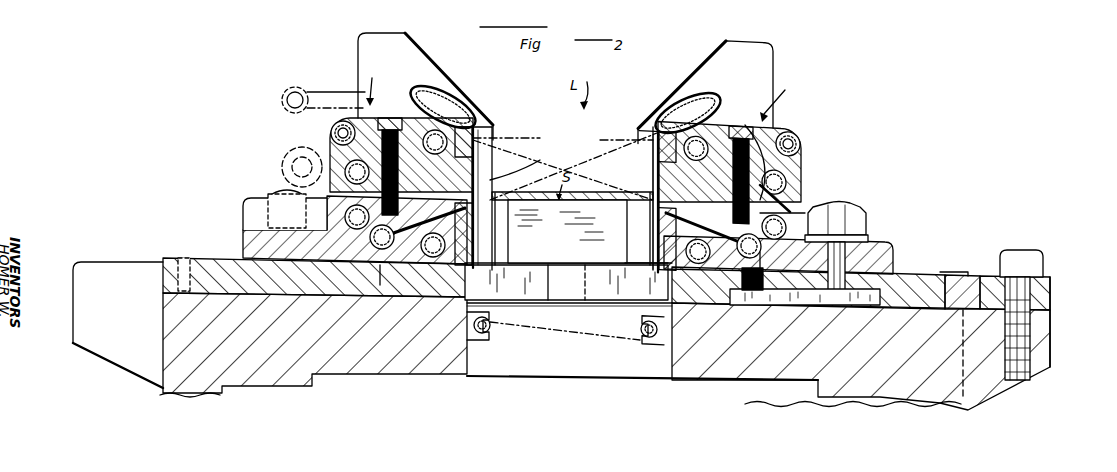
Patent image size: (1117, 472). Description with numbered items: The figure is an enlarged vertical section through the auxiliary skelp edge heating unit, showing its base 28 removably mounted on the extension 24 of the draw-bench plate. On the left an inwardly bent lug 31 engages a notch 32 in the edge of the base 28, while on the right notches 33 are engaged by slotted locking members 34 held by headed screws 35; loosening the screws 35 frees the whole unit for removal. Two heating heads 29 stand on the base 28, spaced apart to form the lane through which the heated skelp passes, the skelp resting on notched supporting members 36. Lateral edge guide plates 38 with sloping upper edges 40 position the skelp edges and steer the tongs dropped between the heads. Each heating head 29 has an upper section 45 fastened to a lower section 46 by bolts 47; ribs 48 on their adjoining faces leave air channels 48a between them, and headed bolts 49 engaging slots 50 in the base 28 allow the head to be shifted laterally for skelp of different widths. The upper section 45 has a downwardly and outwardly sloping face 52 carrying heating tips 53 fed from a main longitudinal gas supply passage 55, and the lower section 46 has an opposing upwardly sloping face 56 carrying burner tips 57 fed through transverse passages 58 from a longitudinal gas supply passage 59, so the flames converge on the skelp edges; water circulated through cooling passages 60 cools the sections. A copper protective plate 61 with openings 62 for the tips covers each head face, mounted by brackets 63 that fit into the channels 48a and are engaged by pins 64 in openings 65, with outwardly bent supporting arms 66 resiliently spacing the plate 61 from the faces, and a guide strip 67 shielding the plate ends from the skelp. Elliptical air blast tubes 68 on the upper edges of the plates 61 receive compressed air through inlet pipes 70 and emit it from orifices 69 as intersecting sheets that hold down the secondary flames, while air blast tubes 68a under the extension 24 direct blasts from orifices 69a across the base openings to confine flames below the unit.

The extension of the draw-bench plate 24 is at (180, 364).
The base 28 is at (912, 278).
The heating heads 29 is at (584, 93).
The inwardly bent lug 31 is at (133, 262).
The notch 32 is at (182, 257).
The notches 33 is at (955, 275).
The slotted locking members 34 is at (1050, 300).
The headed screws 35 is at (1018, 252).
The notched supporting members 36 is at (560, 268).
The lateral edge guide plates 38 is at (378, 45).
The sloping upper edges 40 is at (438, 70).
The upper section 45 is at (358, 117).
The lower section 46 is at (243, 233).
The bolts 47 is at (390, 116).
The ribs or flanges 48 is at (780, 195).
The air channels or slots 48a is at (290, 190).
The headed bolts 49 is at (862, 218).
The slots 50 is at (805, 290).
The downwardly and outwardly sloping face 52 is at (540, 180).
The heating tips 53 is at (535, 165).
The main longitudinal gas supply passage 55 is at (330, 133).
The upwardly and outwardly sloping faces 56 is at (640, 262).
The burner tips 57 is at (562, 225).
The transverse passages 58 is at (718, 272).
The longitudinal gas supply passage 59 is at (380, 285).
The cooling passages 60 is at (318, 160).
The protective plate 61 is at (492, 138).
The openings 62 is at (560, 240).
The brackets 63 is at (600, 200).
The screws or pins 64 is at (757, 145).
The openings 65 is at (780, 190).
The outwardly bent supporting arms 66 is at (650, 235).
The guide strip 67 is at (510, 143).
The air blast tubes 68 is at (447, 97).
The air blast tubes 68a is at (493, 325).
The orifices 69 is at (478, 122).
The orifices 69a is at (488, 338).
The inlet pipes 70 is at (283, 85).